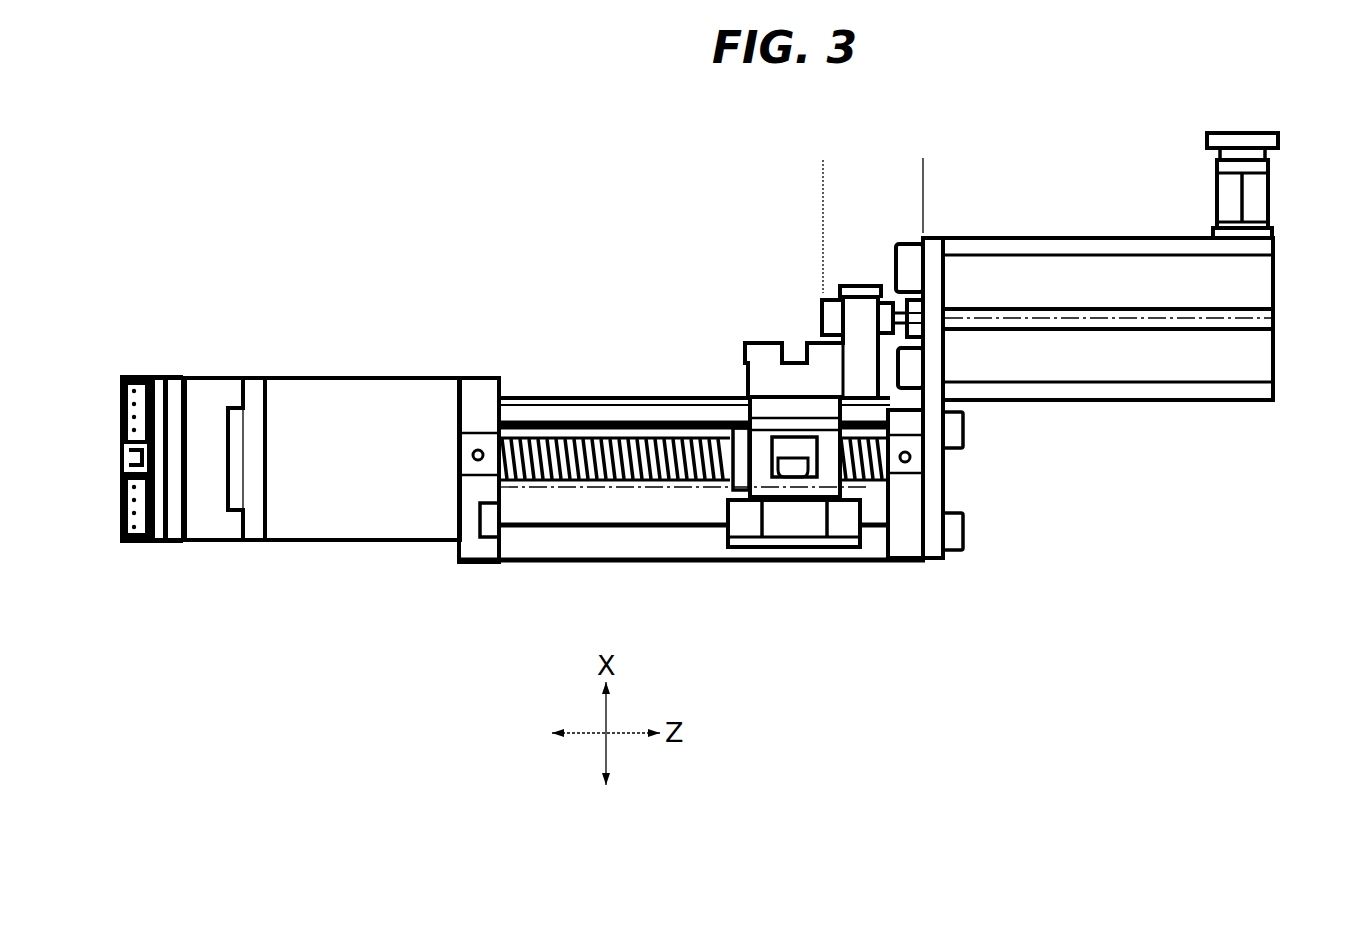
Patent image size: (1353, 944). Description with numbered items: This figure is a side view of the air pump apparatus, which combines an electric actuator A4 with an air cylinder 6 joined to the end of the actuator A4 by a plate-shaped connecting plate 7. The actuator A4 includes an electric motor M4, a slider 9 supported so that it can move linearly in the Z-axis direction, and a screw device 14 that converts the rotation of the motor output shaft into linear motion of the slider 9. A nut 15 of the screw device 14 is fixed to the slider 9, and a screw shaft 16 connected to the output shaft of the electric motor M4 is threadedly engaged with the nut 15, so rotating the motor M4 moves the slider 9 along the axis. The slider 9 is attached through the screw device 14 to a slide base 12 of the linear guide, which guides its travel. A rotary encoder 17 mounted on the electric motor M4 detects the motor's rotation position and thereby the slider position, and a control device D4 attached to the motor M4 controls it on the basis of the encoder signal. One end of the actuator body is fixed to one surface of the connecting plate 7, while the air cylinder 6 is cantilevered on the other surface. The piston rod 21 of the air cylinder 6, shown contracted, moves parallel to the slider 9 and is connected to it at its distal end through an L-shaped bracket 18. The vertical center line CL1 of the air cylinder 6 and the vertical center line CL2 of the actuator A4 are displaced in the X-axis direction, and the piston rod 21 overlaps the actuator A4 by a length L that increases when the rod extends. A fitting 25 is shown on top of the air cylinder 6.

The control device D4 is at (120, 385).
The rotary encoder 17 is at (203, 397).
The electric motor M4 is at (331, 405).
The electric actuator A4 is at (566, 395).
The screw device 14 is at (720, 323).
The screw shaft 16 is at (632, 437).
The nut 15 is at (736, 428).
The slider 9 is at (792, 400).
The L-shaped bracket 18 is at (860, 307).
The piston rod 21 is at (897, 305).
The slide base 12 is at (797, 522).
The connecting plate 7 is at (932, 485).
The air cylinder 6 is at (1070, 272).
The center line of the air cylinder CL1 is at (1219, 318).
The center line of the actuator CL2 is at (547, 490).
The fitting 25 is at (1262, 197).
The length L is at (923, 163).